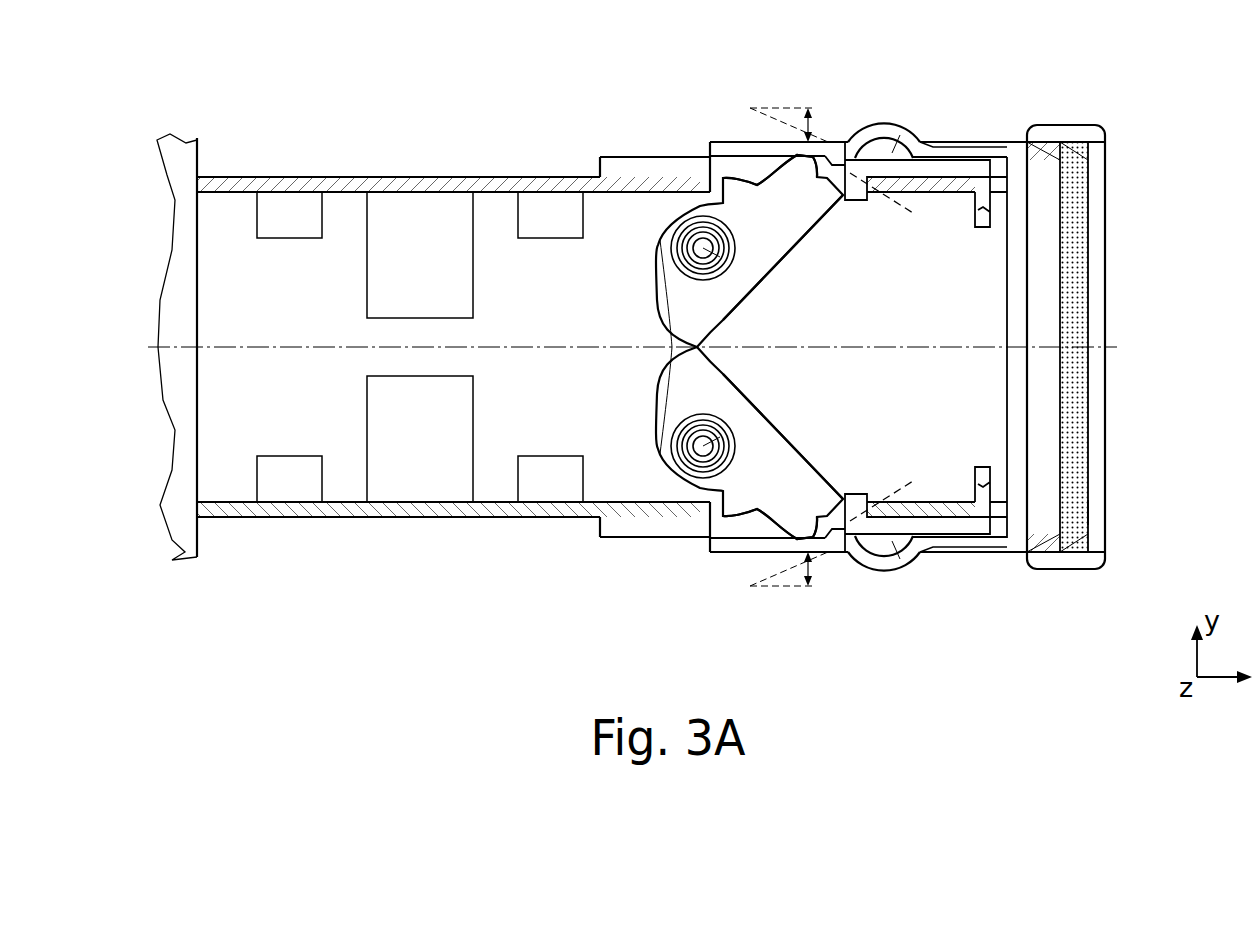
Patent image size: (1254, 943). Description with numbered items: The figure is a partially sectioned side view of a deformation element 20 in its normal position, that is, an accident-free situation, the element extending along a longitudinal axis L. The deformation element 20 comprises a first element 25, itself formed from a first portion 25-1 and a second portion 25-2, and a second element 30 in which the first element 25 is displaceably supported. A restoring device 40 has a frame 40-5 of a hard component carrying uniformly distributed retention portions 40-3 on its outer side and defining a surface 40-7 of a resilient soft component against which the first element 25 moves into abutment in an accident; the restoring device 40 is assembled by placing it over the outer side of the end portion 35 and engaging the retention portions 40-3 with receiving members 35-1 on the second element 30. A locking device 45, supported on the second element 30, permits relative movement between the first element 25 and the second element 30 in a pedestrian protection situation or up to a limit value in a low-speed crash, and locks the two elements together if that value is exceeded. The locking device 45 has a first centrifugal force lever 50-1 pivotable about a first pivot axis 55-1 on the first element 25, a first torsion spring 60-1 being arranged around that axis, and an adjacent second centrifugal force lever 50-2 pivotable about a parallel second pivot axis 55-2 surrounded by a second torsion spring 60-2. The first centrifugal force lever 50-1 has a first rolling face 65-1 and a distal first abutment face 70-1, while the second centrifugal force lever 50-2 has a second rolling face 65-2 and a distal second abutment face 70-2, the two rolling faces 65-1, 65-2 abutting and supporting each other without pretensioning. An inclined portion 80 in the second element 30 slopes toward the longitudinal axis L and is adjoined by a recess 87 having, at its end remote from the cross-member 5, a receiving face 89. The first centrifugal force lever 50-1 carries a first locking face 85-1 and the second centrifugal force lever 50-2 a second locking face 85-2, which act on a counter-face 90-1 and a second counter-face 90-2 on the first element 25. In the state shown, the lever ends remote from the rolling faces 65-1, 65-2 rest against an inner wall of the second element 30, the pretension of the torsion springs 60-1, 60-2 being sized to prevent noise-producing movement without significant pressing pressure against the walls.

The cross-member 5 is at (187, 442).
The longitudinal axis L is at (160, 352).
The deformation element 20 is at (522, 148).
The first element 25 is at (425, 175).
The first portion 25-1 is at (295, 258).
The second portion 25-2 is at (603, 176).
The second element 30 is at (1027, 145).
The end portion 35 is at (1077, 140).
The receiving members 35-1 is at (1045, 150).
The restoring device 40 is at (1050, 462).
The retention portions 40-3 is at (1068, 162).
The frame 40-5 is at (1085, 557).
The surface 40-7 is at (1082, 512).
The locking device 45 is at (626, 425).
The first centrifugal force lever 50-1 is at (790, 205).
The second centrifugal force lever 50-2 is at (790, 489).
The first pivot axis 55-1 is at (763, 257).
The second pivot axis 55-2 is at (763, 437).
The first torsion spring 60-1 is at (791, 188).
The second torsion spring 60-2 is at (791, 497).
The first rolling face 65-1 is at (658, 245).
The second rolling face 65-2 is at (658, 449).
The first abutment face 70-1 is at (832, 160).
The second abutment face 70-2 is at (832, 534).
The inclined portion 80 is at (840, 142).
The first locking face 85-1 is at (723, 178).
The second locking face 85-2 is at (723, 516).
The recess 87 is at (892, 153).
The receiving face 89 is at (980, 147).
The counter-face 90-1 is at (703, 182).
The second counter-face 90-2 is at (703, 512).